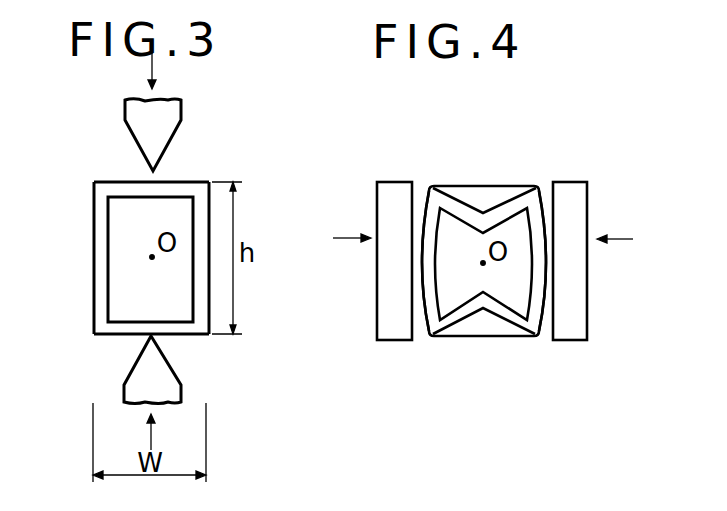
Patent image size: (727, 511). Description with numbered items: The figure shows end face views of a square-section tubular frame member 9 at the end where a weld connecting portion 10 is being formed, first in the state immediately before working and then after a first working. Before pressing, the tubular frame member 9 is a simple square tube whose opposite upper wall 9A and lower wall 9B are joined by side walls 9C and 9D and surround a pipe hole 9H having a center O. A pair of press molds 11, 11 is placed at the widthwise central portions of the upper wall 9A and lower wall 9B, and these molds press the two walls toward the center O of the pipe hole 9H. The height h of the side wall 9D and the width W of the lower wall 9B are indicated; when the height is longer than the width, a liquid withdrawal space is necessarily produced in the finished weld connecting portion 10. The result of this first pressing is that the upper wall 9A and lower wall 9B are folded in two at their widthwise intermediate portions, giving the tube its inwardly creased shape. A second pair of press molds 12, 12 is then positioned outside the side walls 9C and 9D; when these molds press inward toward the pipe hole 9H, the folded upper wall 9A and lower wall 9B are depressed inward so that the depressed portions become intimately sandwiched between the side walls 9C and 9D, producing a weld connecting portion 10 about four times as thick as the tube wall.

In FIG. 4, the tubular frame member 9 is at (480, 262).
In FIG. 3, the upper wall 9A is at (116, 181).
In FIG. 4, the upper wall 9A is at (457, 199).
In FIG. 3, the lower wall 9B is at (108, 336).
In FIG. 4, the lower wall 9B is at (460, 332).
In FIG. 3, the side wall 9C is at (94, 258).
In FIG. 4, the side wall 9C is at (426, 271).
In FIG. 3, the side wall 9D is at (212, 183).
In FIG. 4, the side wall 9D is at (545, 269).
In FIG. 3, the pipe hole 9H is at (115, 216).
In FIG. 4, the pipe hole 9H is at (511, 297).
In FIG. 3, the weld connecting portion 10 is at (131, 259).
In FIG. 4, the weld connecting portion 10 is at (480, 263).
In FIG. 3, the press mold 11 is at (176, 116).
In FIG. 4, the press mold 12 is at (390, 182).